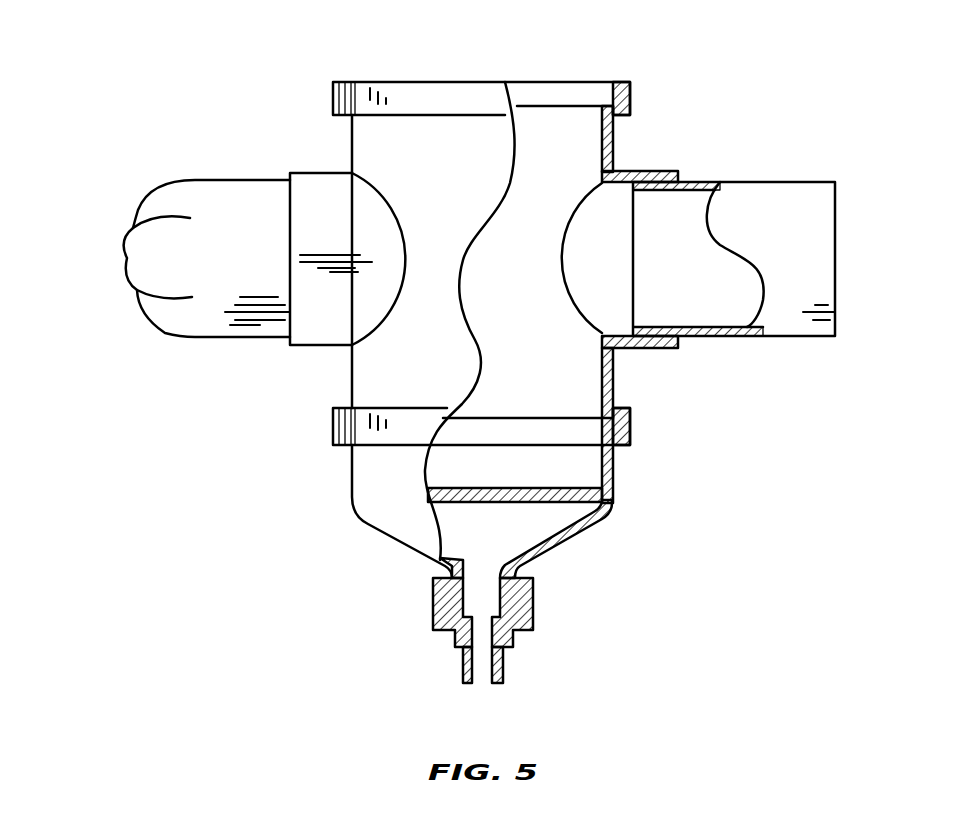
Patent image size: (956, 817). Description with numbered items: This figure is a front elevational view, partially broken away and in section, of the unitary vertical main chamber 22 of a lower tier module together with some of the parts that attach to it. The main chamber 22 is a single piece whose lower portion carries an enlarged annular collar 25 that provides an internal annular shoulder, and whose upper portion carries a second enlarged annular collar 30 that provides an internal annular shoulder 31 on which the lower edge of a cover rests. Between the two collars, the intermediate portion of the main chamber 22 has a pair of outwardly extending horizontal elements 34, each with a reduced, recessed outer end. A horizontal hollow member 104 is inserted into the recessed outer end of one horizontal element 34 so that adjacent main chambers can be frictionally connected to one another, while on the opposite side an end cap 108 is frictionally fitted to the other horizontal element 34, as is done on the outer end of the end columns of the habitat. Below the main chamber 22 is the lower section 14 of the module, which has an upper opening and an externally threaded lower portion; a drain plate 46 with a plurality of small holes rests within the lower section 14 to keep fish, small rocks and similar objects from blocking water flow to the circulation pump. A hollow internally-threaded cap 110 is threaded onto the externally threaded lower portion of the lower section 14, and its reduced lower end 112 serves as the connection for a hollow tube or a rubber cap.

The lower section 14 is at (350, 481).
The unitary vertical main chamber 22 is at (340, 372).
The enlarged annular collar 25 is at (628, 424).
The enlarged annular collar 30 is at (333, 88).
The internal annular shoulder 31 is at (606, 104).
The outwardly extending horizontal elements 34 is at (330, 168).
The drain plate 46 is at (548, 487).
The horizontal hollow member 104 is at (778, 338).
The end cap 108 is at (127, 262).
The hollow internally-threaded cap 110 is at (538, 622).
The reduced lower end 112 is at (503, 672).